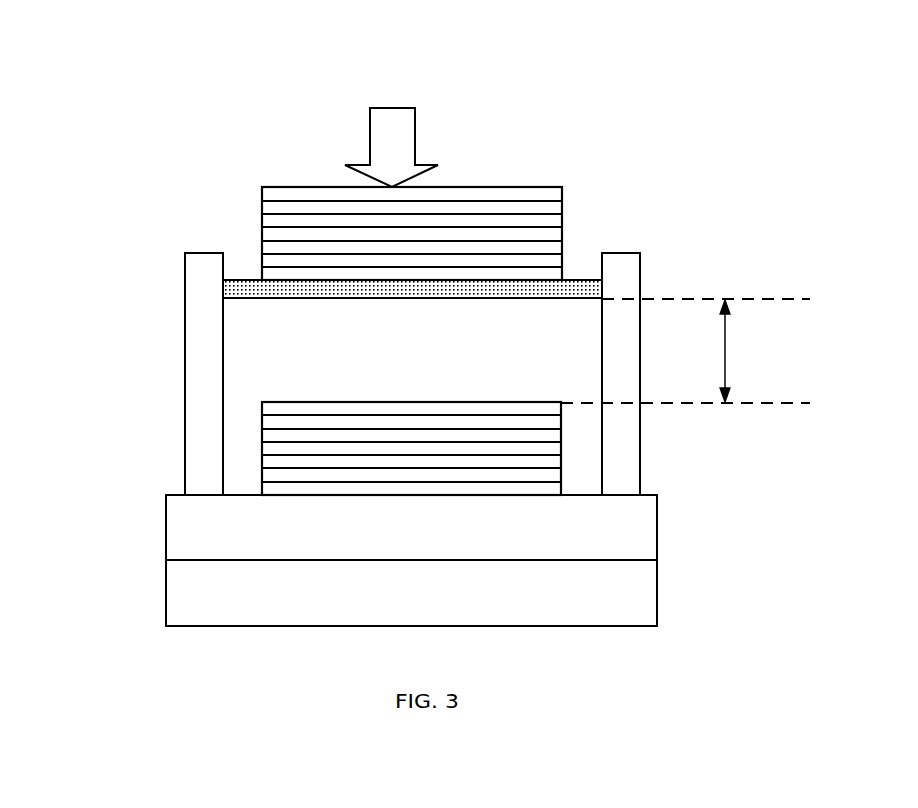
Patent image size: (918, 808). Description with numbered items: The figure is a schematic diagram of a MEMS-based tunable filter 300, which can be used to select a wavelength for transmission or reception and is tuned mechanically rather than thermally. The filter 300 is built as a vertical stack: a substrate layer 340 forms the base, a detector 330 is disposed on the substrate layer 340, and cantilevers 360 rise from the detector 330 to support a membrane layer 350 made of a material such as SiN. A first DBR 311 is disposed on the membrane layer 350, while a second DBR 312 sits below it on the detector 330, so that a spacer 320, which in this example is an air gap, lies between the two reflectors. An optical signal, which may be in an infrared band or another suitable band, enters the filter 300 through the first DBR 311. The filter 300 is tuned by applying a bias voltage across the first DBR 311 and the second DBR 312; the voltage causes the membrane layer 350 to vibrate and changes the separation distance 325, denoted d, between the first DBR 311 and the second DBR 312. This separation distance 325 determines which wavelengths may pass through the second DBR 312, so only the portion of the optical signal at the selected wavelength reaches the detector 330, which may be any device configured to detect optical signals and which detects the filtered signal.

The MEMS-based tunable filter 300 is at (98, 102).
The first DBR 311 is at (253, 187).
The second DBR 312 is at (258, 495).
The spacer 320 is at (270, 364).
The separation distance 325 is at (728, 352).
The detector 330 is at (166, 545).
The substrate layer 340 is at (166, 598).
The membrane layer 350 is at (574, 280).
The cantilevers 360 is at (185, 288).